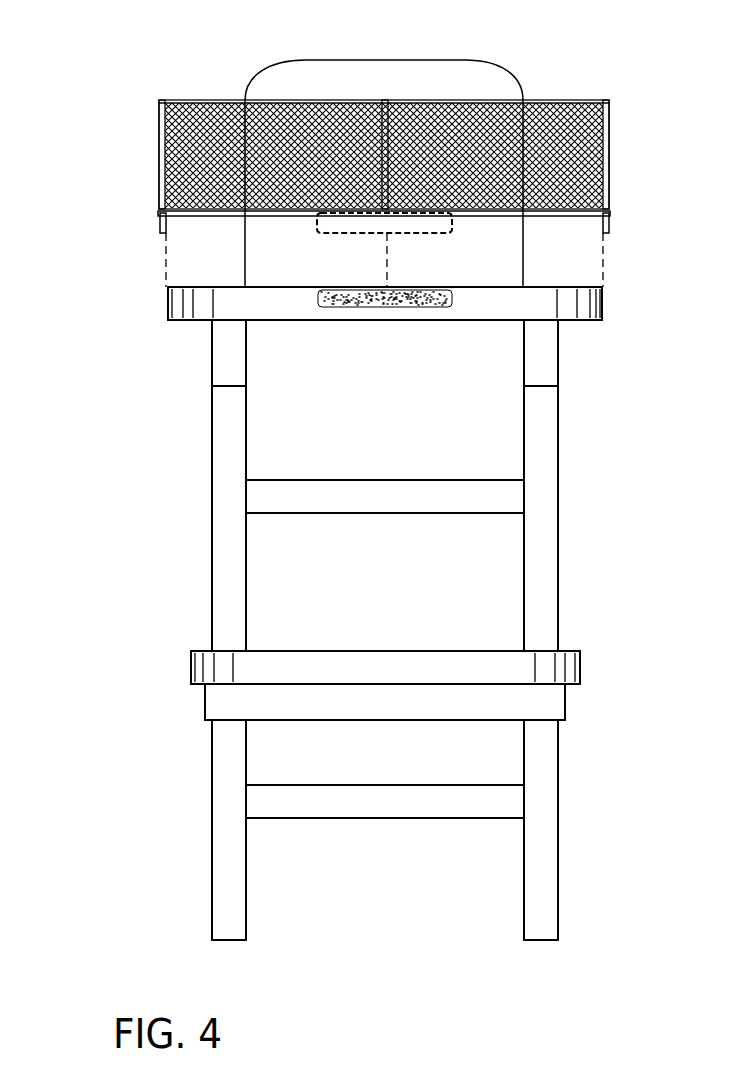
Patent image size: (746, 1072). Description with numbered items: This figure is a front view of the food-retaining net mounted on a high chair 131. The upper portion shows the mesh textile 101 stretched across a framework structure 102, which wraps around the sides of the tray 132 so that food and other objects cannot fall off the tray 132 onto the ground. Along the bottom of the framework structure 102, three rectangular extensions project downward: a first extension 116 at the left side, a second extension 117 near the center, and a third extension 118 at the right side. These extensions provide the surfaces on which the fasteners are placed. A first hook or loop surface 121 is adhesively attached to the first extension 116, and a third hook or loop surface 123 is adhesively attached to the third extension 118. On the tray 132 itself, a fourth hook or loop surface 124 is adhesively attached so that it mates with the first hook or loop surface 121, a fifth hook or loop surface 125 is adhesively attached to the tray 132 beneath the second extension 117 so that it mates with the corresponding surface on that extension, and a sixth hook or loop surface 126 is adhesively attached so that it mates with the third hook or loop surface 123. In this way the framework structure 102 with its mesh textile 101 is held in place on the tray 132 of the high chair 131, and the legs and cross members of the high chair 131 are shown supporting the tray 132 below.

The mesh textile 101 is at (567, 138).
The framework structure 102 is at (553, 100).
The first extension 116 is at (160, 223).
The second extension 117 is at (420, 233).
The third extension 118 is at (608, 226).
The first hook or loop surface 121 is at (166, 225).
The third hook or loop surface 123 is at (604, 226).
The fourth hook or loop surface 124 is at (168, 300).
The fifth hook or loop surface 125 is at (400, 310).
The sixth hook or loop surface 126 is at (604, 298).
The high chair 131 is at (557, 455).
The tray 132 is at (568, 314).